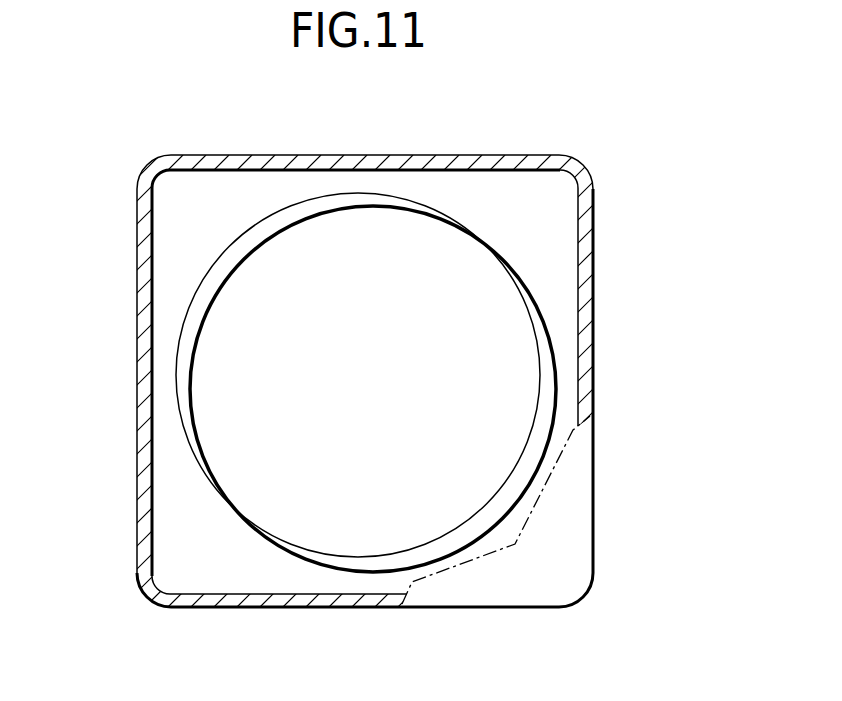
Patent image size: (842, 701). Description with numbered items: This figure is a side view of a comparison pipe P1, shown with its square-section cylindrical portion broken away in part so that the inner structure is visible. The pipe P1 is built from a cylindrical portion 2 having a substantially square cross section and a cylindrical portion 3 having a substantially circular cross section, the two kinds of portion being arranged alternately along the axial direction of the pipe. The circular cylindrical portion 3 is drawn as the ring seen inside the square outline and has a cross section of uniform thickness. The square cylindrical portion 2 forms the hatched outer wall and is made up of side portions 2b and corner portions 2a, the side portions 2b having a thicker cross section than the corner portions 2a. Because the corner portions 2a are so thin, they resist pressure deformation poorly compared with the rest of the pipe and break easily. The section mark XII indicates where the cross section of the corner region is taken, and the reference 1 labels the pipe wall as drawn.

The case 1 is at (421, 368).
The cylindrical portion 2 is at (421, 368).
The corner portions 2a is at (143, 185).
The side portions 2b is at (350, 157).
The cylindrical portion 3 is at (543, 400).
The pipe P1 is at (615, 217).
The section line XII is at (639, 169).